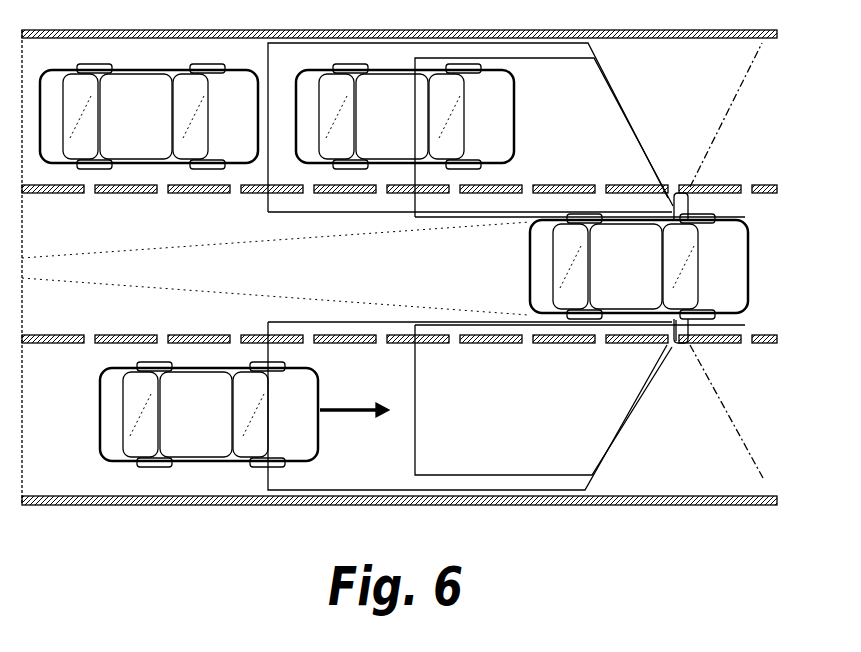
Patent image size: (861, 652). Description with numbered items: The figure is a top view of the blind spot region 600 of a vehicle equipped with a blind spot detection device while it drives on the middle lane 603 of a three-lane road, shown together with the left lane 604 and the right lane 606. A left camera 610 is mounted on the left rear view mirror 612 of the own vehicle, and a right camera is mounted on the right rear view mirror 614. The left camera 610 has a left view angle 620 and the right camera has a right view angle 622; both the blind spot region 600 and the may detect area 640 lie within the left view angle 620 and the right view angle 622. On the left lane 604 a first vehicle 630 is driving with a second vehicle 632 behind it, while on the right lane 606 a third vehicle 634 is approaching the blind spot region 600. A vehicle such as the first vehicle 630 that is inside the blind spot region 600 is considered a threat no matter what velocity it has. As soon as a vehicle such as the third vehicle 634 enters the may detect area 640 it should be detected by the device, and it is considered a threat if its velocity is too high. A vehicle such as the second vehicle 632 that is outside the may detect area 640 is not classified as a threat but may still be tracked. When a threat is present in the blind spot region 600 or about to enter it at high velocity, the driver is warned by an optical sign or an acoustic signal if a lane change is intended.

The blind spot region 600 is at (595, 167).
The middle lane 603 is at (802, 279).
The left lane 604 is at (787, 124).
The right lane 606 is at (789, 431).
The left camera 610 is at (691, 205).
The left rear view mirror 612 is at (674, 190).
The right rear view mirror 614 is at (677, 348).
The left view angle 620 is at (695, 77).
The right view angle 622 is at (695, 483).
The first vehicle 630 is at (403, 129).
The second vehicle 632 is at (147, 129).
The third vehicle 634 is at (209, 427).
The may detect area 640 is at (296, 69).